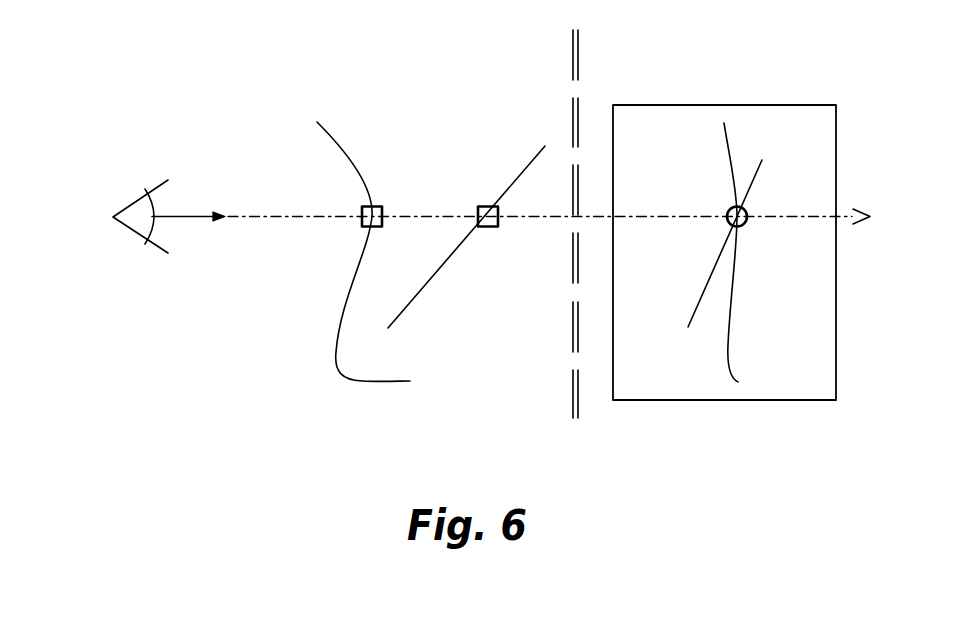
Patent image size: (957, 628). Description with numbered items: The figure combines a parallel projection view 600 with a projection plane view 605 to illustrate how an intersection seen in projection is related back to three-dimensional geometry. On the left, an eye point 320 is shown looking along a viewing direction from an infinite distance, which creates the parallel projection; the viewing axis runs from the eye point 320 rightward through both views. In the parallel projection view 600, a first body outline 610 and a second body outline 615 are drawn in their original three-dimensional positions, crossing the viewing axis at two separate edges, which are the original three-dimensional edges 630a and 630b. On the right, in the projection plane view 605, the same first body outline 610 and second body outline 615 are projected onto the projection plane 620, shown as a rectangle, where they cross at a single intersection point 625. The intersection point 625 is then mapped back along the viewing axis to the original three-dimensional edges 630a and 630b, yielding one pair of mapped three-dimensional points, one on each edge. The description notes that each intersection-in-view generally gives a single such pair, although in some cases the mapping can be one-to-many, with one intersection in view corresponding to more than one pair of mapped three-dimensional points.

The eye point 320 is at (143, 184).
The parallel projection view 600 is at (270, 112).
The projection plane view 605 is at (749, 62).
The first body outline 610 is at (333, 368).
The second body outline 615 is at (535, 155).
The projection plane 620 is at (720, 100).
The intersection point 625 is at (722, 208).
The original 3d edge 630a is at (390, 212).
The original 3d edge 630b is at (491, 237).